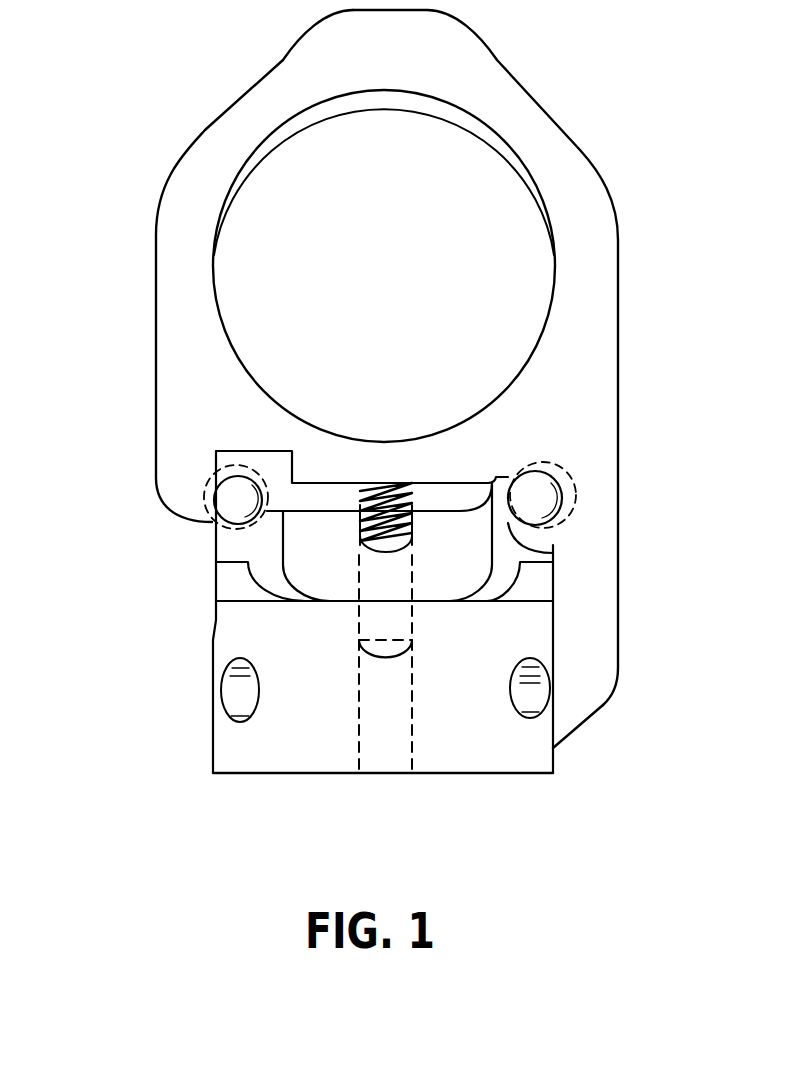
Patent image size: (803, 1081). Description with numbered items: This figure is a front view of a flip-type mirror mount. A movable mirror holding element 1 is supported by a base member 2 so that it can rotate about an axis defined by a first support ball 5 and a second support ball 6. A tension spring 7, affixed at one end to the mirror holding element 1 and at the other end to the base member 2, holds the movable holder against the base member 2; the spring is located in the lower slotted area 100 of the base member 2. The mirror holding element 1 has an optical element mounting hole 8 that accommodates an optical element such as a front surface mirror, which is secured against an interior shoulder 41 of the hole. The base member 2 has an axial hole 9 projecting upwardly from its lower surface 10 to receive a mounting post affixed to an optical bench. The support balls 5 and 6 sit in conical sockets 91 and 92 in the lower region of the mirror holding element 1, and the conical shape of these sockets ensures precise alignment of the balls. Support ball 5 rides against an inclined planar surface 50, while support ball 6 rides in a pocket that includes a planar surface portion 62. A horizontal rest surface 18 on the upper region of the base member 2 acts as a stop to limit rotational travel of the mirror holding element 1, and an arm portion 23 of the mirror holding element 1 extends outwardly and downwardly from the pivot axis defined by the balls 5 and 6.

The movable mirror holding element 1 is at (593, 270).
The base member 2 is at (482, 755).
The first support ball 5 is at (227, 507).
The second support ball 6 is at (543, 497).
The tension spring 7 is at (407, 503).
The optical element mounting hole 8 is at (462, 117).
The axial hole 9 is at (360, 738).
The lower surface 10 is at (440, 773).
The rest surface 18 is at (247, 527).
The arm portion 23 is at (610, 615).
The interior shoulder 41 is at (297, 127).
The inclined planar surface 50 is at (243, 563).
The planar surface portion 62 is at (553, 553).
The conical socket 91 is at (210, 472).
The conical socket 92 is at (560, 473).
The lower slotted area 100 is at (413, 617).